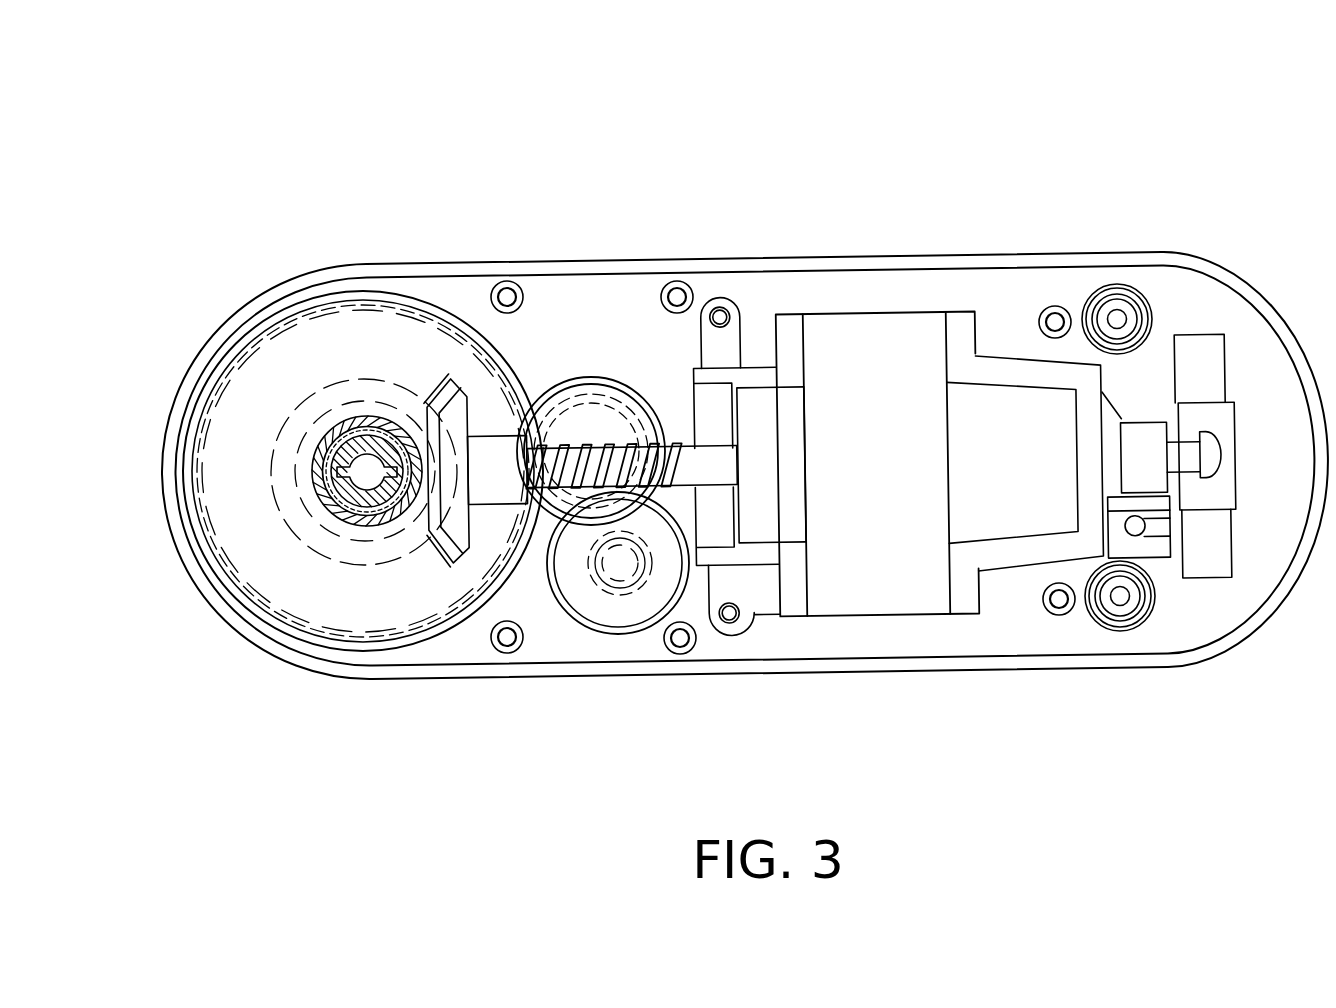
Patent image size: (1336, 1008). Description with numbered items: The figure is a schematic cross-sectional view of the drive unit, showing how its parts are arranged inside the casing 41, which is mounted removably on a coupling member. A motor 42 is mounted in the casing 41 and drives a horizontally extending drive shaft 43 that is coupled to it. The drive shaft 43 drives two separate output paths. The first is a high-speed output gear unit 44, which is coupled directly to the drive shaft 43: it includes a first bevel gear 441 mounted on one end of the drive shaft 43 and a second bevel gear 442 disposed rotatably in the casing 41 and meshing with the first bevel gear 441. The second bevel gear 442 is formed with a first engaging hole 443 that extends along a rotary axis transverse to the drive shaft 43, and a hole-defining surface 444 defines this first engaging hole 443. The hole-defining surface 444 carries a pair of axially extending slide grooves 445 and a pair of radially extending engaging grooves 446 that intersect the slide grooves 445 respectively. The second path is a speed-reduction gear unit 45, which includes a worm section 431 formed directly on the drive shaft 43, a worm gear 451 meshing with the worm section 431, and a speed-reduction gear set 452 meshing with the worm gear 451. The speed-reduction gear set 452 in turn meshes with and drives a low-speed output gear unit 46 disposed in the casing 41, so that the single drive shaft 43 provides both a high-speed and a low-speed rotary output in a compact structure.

The casing 41 is at (1090, 256).
The motor 42 is at (901, 347).
The drive shaft 43 is at (714, 462).
The worm section 431 is at (642, 408).
The high-speed output gear unit 44 is at (394, 338).
The first bevel gear 441 is at (438, 381).
The second bevel gear 442 is at (355, 375).
The first engaging hole 443 is at (362, 512).
The hole-defining surface 444 is at (340, 516).
The slide grooves 445 is at (337, 467).
The engaging grooves 446 is at (408, 522).
The speed-reduction gear unit 45 is at (612, 650).
The worm gear 451 is at (641, 616).
The speed-reduction gear set 452 is at (590, 568).
The low-speed output gear unit 46 is at (522, 400).